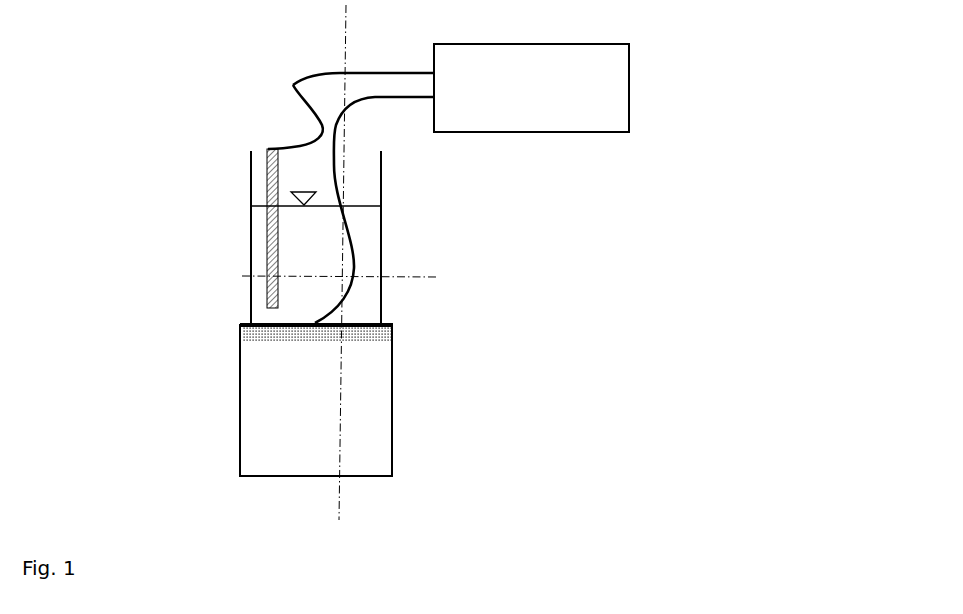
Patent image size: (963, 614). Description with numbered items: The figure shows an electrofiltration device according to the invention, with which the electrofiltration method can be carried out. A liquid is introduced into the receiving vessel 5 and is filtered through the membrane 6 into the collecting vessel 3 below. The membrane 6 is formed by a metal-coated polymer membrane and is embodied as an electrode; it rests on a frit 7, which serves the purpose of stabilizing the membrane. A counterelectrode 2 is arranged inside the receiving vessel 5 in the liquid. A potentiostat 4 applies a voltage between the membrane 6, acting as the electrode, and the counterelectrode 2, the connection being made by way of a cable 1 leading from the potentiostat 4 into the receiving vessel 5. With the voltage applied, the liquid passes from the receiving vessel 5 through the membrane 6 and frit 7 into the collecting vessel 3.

The cable 1 is at (333, 126).
The counterelectrode 2 is at (268, 247).
The collecting vessel 3 is at (250, 426).
The potentiostat 4 is at (531, 88).
The receiving vessel 5 is at (381, 251).
The membrane 6 is at (360, 323).
The frit 7 is at (383, 335).